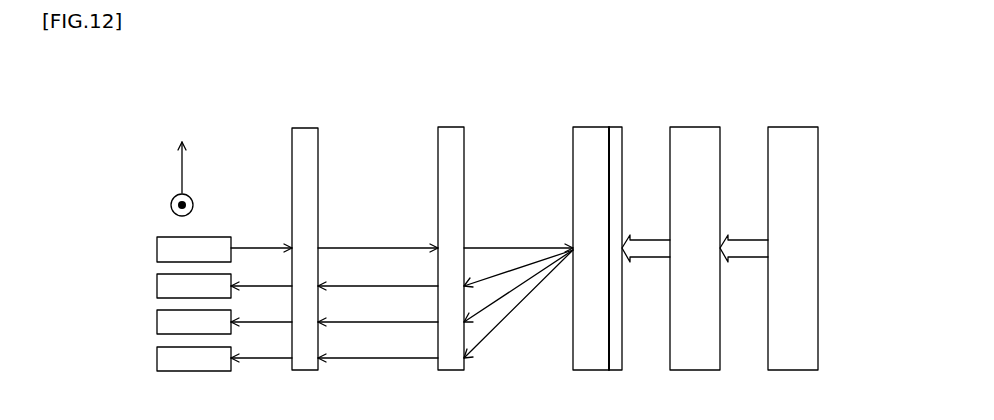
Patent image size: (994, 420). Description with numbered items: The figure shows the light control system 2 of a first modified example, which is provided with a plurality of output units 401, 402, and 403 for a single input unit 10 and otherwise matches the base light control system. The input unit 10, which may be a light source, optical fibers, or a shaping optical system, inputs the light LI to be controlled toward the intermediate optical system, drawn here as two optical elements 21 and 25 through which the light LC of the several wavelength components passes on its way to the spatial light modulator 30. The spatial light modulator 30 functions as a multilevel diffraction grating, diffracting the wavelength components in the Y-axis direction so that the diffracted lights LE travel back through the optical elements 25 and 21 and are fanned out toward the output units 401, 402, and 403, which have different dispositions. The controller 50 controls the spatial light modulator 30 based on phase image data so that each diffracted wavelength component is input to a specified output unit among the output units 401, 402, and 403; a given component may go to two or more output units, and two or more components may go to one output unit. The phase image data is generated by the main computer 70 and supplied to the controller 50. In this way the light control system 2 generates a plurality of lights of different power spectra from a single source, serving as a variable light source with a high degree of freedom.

The light control system 2 is at (367, 113).
The input unit 10 is at (157, 241).
The optical element (beam splitter) 21 is at (303, 128).
The optical element (lens) 25 is at (455, 127).
The spatial light modulator 30 is at (614, 127).
The controller 50 is at (700, 127).
The main computer 70 is at (785, 370).
The output unit 401 is at (157, 288).
The output unit 402 is at (157, 324).
The output unit 403 is at (157, 361).